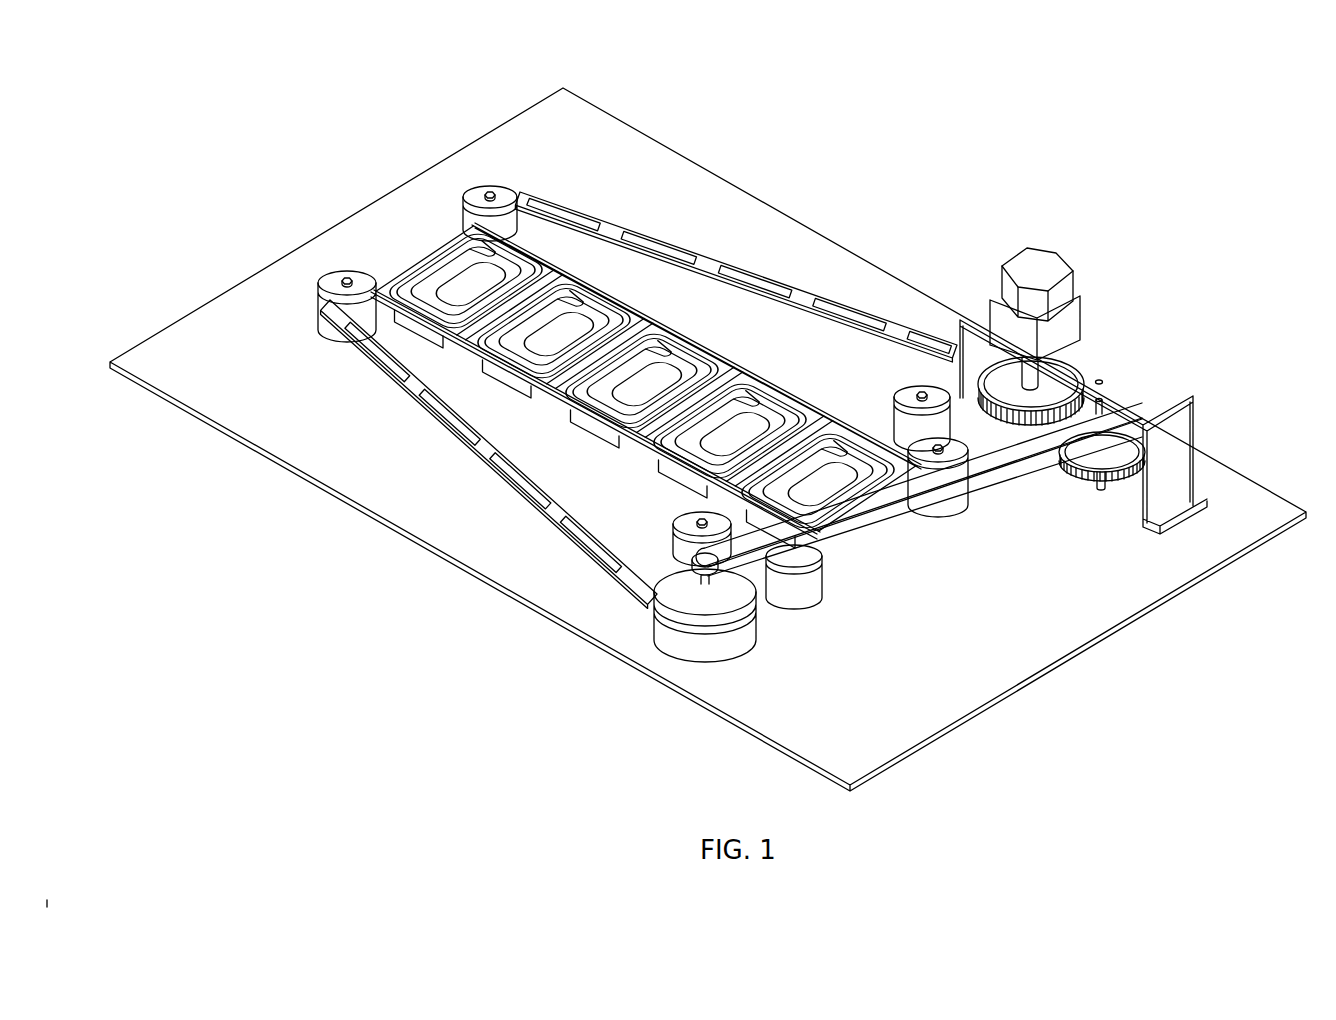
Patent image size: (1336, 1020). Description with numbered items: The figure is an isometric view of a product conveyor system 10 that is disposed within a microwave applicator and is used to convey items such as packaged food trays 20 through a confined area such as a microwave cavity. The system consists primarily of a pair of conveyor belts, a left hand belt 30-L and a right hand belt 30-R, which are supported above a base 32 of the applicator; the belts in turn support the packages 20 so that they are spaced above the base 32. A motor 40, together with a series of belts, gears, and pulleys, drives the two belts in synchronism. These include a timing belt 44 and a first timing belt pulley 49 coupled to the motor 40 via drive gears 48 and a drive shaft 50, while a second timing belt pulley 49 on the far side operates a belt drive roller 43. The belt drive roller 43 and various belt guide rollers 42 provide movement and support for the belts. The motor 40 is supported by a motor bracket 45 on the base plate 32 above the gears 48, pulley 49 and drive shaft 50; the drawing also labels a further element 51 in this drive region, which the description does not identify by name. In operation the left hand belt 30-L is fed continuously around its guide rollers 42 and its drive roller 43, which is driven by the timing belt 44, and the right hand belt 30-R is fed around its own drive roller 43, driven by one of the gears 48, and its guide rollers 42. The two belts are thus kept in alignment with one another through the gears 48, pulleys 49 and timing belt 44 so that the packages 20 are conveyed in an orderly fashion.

The product conveyor system 10 is at (214, 168).
The packaged food trays 20 is at (420, 335).
The left hand belt 30-L is at (482, 450).
The right hand belt 30-R is at (660, 238).
The base 32 is at (697, 160).
The motor 40 is at (1058, 267).
The belt guide rollers 42 is at (320, 318).
The belt drive roller 43 is at (660, 640).
The timing belt 44 is at (905, 510).
The motor bracket 45 is at (1205, 505).
The drive gears 48 is at (1057, 432).
The timing belt pulley 49 is at (700, 560).
The drive shaft 50 is at (1102, 382).
The gear 51 is at (1035, 380).